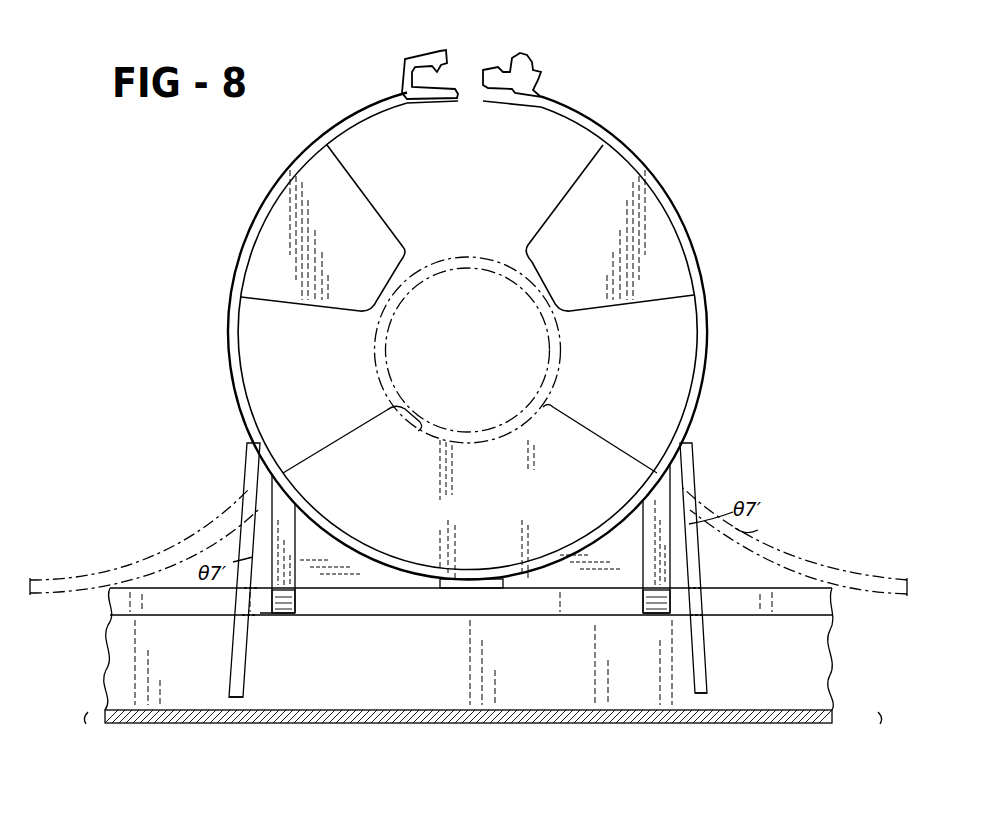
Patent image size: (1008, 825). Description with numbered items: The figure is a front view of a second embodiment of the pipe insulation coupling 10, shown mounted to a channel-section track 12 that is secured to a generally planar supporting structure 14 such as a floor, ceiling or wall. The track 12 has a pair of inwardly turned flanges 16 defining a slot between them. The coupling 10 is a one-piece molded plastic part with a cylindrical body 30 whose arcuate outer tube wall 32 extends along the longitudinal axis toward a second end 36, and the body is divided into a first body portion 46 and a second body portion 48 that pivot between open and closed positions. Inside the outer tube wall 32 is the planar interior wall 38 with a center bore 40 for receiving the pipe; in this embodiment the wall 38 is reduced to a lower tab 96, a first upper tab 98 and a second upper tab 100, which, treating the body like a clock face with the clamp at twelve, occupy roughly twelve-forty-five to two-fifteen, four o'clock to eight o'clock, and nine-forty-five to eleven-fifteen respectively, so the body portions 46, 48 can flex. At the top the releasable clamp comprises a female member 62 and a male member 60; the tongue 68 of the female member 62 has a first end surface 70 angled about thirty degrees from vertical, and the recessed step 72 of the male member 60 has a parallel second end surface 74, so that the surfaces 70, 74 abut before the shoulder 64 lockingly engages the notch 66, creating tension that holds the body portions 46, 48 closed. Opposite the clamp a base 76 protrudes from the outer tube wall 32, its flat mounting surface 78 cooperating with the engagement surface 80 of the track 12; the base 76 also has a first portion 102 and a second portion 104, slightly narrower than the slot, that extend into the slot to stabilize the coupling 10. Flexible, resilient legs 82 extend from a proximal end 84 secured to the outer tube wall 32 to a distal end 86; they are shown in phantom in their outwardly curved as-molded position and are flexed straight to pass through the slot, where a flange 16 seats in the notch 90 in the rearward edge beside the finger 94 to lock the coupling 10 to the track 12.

The pipe insulation coupling 10 is at (694, 147).
The channel-section track 12 is at (817, 633).
The supporting structure 14 is at (840, 724).
The flanges 16 is at (818, 590).
The cylindrical body 30 is at (226, 352).
The outer tube wall 32 is at (706, 360).
The second end 36 is at (232, 376).
The planar interior wall 38 is at (541, 525).
The center bore 40 is at (400, 414).
The first body portion 46 is at (700, 236).
The second body portion 48 is at (240, 245).
The male member 60 is at (527, 80).
The female member 62 is at (403, 68).
The shoulder 64 is at (432, 52).
The notch 66 is at (507, 66).
The tongue 68 is at (428, 100).
The first end surface 70 is at (455, 100).
The recessed step 72 is at (490, 98).
The second end surface 74 is at (505, 100).
The base 76 is at (248, 530).
The flat mounting surface 78 is at (536, 590).
The engagement surface 80 is at (145, 583).
The legs 82 is at (237, 505).
The proximal end 84 is at (248, 462).
The distal end 86 is at (229, 700).
The second notch 90 is at (248, 607).
The finger 94 is at (248, 660).
The lower tab 96 is at (588, 432).
The first upper tab 98 is at (563, 218).
The second upper tab 100 is at (282, 297).
The first portion 102 is at (650, 613).
The second portion 104 is at (287, 605).